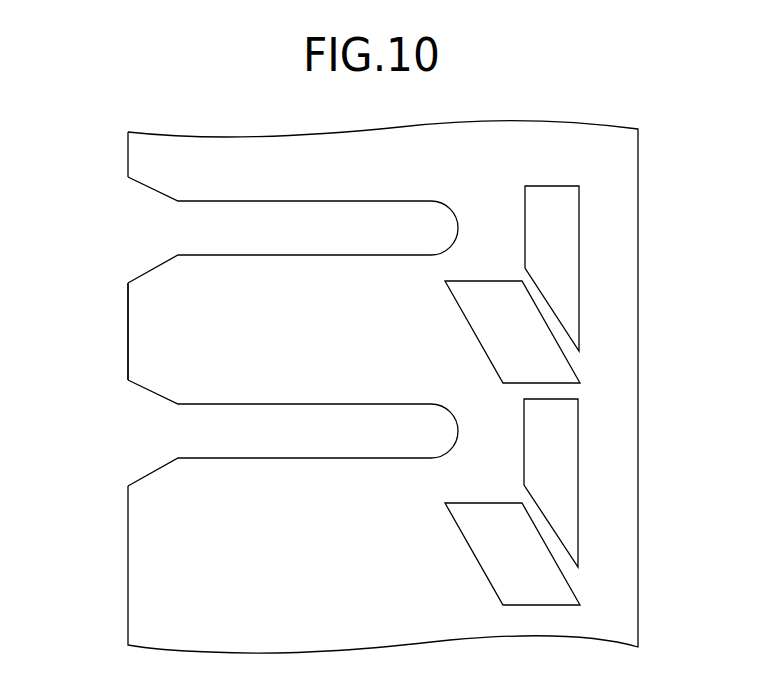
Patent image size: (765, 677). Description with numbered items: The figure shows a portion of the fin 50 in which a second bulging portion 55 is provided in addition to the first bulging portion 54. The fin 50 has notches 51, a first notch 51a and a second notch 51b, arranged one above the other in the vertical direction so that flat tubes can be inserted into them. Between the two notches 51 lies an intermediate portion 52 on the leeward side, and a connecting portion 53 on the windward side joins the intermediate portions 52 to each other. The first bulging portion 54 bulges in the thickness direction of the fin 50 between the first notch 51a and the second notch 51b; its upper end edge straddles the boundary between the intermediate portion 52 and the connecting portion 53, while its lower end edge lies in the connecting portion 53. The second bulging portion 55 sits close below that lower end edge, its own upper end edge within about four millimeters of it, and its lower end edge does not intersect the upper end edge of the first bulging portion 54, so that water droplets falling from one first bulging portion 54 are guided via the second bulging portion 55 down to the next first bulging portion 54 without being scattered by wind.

The fin 50 is at (640, 282).
The notches 51 is at (245, 331).
The first notch 51a is at (200, 227).
The second notch 51b is at (200, 432).
The intermediate portion 52 is at (203, 331).
The connecting portion 53 is at (610, 498).
The first bulging portion 54 is at (510, 331).
The second bulging portion 55 is at (550, 240).